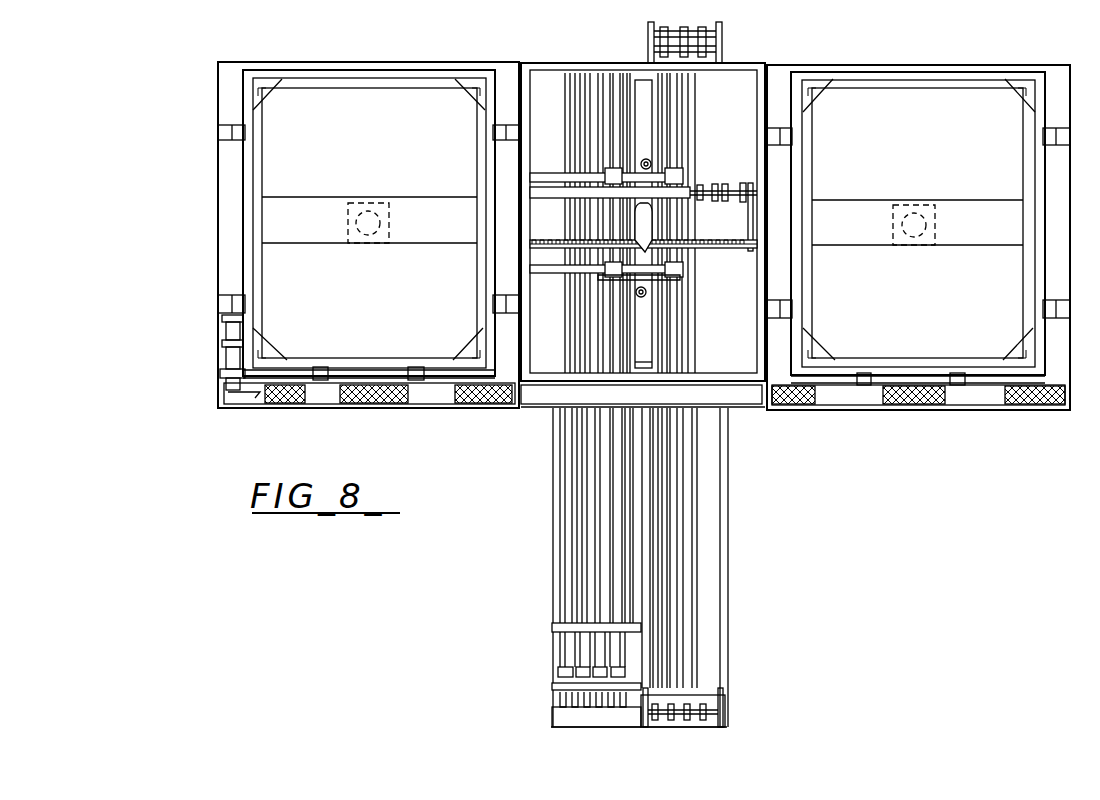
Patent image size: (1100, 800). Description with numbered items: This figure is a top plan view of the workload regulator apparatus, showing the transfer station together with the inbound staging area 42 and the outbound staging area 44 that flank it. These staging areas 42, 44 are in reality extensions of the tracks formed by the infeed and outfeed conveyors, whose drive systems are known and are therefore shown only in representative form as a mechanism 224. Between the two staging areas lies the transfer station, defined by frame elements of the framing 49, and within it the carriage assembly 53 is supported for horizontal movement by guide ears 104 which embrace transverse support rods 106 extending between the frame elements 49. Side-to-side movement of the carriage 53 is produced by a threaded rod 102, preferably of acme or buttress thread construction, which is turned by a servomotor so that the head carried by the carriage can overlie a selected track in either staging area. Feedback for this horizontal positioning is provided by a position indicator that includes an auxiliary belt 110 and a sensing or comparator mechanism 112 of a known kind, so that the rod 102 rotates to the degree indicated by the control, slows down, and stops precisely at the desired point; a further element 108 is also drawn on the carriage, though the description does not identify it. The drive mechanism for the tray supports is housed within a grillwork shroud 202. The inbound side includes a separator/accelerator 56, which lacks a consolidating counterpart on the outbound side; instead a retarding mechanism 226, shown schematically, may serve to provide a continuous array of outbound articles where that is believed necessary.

The inbound staging area 42 is at (656, 374).
The outbound staging area 44 is at (706, 98).
The framing 49 is at (521, 234).
The carriage assembly 53 is at (682, 174).
The separator/accelerator 56 is at (550, 652).
The threaded rod 102 is at (720, 230).
The guide ears 104 is at (607, 172).
The transverse support rods 106 is at (547, 170).
The pawl 108 is at (648, 250).
The auxiliary belt 110 is at (753, 218).
The sensing or comparator mechanism 112 is at (742, 184).
The grillwork shroud 202 is at (795, 406).
The conveyor drive mechanism 224 is at (645, 52).
The retarding mechanism 226 is at (708, 690).